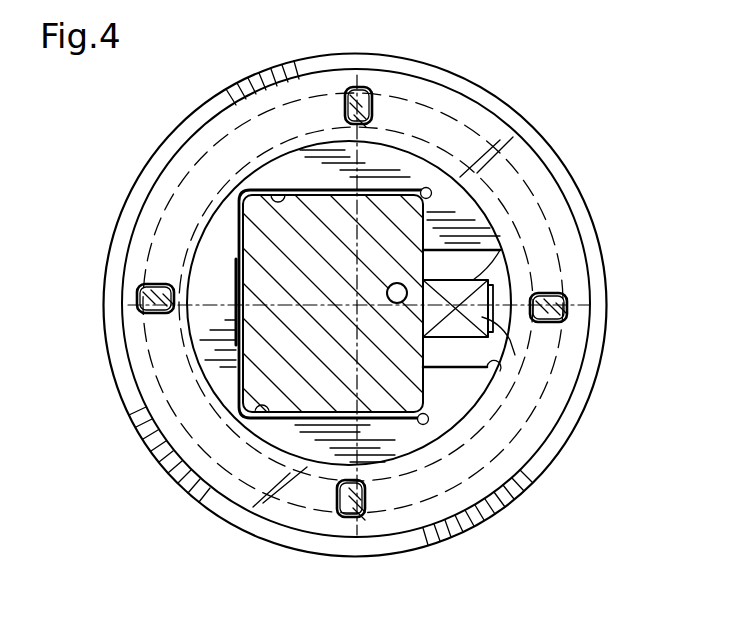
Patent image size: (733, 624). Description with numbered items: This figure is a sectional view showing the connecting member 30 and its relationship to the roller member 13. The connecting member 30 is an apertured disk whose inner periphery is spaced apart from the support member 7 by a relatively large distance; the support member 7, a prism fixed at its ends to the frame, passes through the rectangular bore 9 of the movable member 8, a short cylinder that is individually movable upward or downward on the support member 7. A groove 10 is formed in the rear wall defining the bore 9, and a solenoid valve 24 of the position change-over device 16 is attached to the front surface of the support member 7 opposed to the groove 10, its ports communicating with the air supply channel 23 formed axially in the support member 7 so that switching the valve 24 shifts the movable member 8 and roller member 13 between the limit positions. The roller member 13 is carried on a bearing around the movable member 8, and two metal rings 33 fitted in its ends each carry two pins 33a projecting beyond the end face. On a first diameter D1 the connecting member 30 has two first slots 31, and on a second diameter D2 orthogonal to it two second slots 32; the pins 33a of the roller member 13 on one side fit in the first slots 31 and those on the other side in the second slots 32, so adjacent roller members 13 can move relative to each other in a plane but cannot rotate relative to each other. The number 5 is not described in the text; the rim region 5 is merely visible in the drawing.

The outer rim 5 is at (176, 489).
The support member 7 is at (238, 385).
The movable member 8 is at (402, 445).
The rectangular bore 9 is at (238, 188).
The groove 10 is at (499, 373).
The roller member 13 is at (457, 535).
The position change-over device 16 is at (512, 243).
The air supply channel 23 is at (404, 286).
The solenoid valve 24 is at (495, 333).
The connecting member 30 is at (227, 487).
The first slot 31 is at (367, 93).
The second slot 32 is at (143, 288).
The metal ring 33 is at (492, 463).
The pin 33a is at (347, 93).
The first diameter D1 is at (372, 168).
The second diameter D2 is at (217, 303).